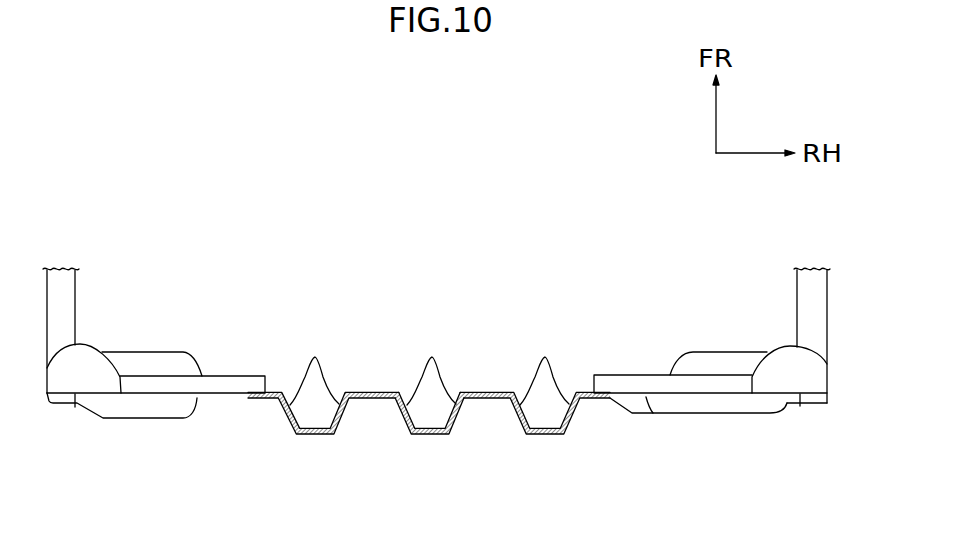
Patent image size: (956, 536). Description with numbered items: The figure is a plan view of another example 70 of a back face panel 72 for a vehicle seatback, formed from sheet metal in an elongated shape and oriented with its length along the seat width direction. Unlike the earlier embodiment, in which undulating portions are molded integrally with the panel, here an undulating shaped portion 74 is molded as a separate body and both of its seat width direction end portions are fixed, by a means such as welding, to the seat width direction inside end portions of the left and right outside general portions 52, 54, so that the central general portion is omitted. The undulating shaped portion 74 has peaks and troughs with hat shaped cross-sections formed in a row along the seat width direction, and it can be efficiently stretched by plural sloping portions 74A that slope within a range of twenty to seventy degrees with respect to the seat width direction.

The outside general portion 52 is at (223, 394).
The outside general portion 54 is at (647, 415).
The other example 70 is at (429, 349).
The back face panel 72 is at (632, 373).
The undulating shaped portion 74 is at (430, 435).
The sloping portion 74A is at (429, 366).